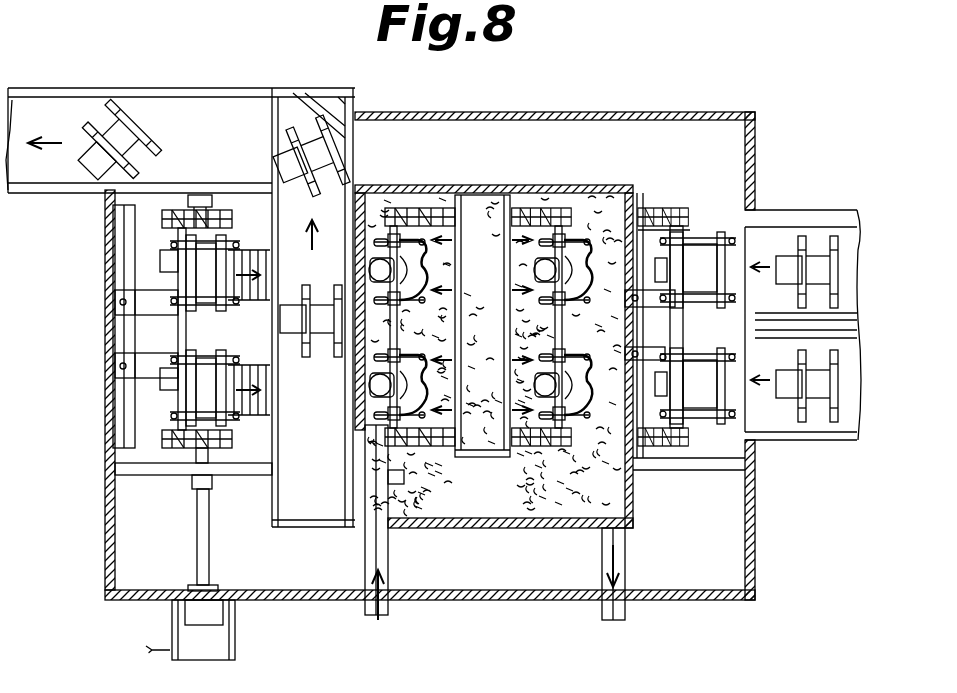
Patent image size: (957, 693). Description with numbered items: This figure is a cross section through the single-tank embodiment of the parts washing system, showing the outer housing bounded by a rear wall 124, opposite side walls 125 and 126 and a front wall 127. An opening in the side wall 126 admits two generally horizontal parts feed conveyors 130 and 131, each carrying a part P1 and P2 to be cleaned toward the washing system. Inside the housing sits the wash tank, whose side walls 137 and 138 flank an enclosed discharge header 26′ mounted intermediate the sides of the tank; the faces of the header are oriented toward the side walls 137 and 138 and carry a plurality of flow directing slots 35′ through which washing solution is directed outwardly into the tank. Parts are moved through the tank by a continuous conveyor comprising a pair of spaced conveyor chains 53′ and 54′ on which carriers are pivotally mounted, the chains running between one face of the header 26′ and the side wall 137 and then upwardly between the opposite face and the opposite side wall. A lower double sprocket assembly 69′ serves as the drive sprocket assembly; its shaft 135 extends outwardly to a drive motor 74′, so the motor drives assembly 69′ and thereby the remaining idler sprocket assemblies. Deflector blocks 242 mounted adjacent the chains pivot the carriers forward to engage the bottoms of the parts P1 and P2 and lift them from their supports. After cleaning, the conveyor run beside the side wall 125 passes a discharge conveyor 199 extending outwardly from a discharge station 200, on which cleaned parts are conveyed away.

The discharge station 200 is at (142, 337).
The front wall 127 is at (672, 114).
The side wall 126 is at (758, 550).
The side wall 125 is at (106, 460).
The rear wall 124 is at (452, 602).
The side wall of the wash tank 137 is at (356, 436).
The discharge conveyor 199 is at (334, 404).
The flow directing slots 35′ is at (518, 215).
The discharge header 26′ is at (490, 196).
The conveyor chain 53′ is at (424, 206).
The conveyor chain 54′ is at (530, 440).
The side wall of the wash tank 138 is at (632, 480).
The deflector blocks 242 is at (664, 310).
The parts feed conveyor 130 is at (826, 188).
The parts feed conveyor 131 is at (838, 440).
The part P1 is at (800, 288).
The part P2 is at (800, 400).
The drive sprocket assembly 69′ is at (196, 470).
The shaft 135 is at (210, 558).
The drive motor 74′ is at (234, 644).